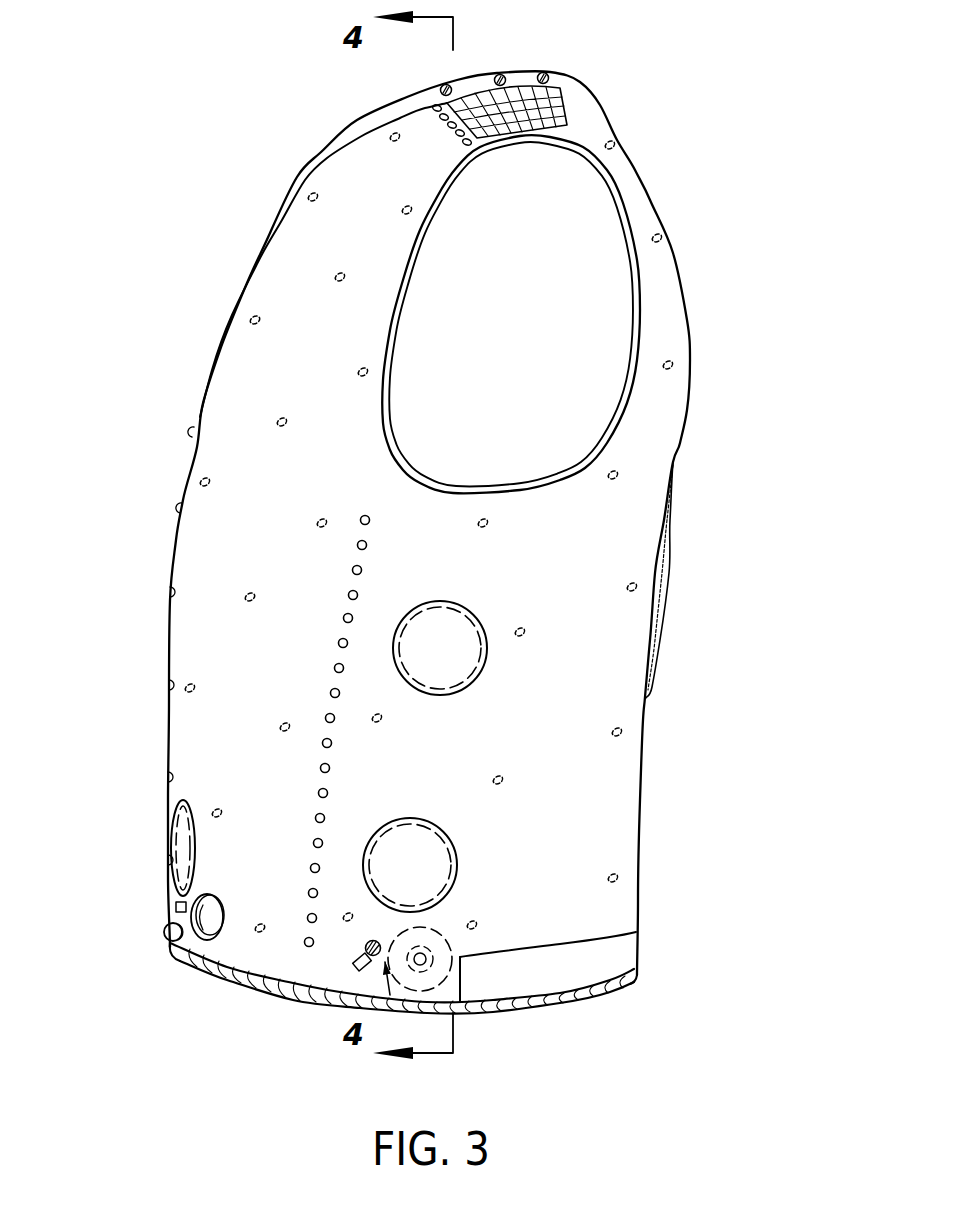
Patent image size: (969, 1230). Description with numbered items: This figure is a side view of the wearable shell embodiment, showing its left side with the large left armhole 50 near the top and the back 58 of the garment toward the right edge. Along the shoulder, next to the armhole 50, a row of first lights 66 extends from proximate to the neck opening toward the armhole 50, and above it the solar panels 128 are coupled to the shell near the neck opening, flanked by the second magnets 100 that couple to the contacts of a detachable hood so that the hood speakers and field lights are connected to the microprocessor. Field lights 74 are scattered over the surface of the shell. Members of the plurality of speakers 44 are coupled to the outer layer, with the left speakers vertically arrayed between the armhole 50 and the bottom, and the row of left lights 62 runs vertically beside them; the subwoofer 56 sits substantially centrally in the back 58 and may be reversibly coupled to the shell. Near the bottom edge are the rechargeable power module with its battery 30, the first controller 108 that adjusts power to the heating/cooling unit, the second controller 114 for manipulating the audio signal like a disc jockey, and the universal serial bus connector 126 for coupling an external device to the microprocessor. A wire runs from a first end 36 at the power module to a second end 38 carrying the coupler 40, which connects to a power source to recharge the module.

The battery 30 is at (562, 962).
The first end 36 is at (462, 977).
The second end 38 is at (340, 978).
The coupler 40 is at (305, 948).
The plurality of speakers 44 is at (405, 650).
The left armhole 50 is at (563, 257).
The subwoofer 56 is at (672, 581).
The back 58 is at (638, 873).
The row of left lights 62 is at (305, 850).
The row of first lights 66 is at (450, 142).
The field lights 74 is at (607, 490).
The second magnets 100 is at (505, 75).
The first controller 108 is at (165, 932).
The second controller 114 is at (200, 930).
The universal serial bus connector 126 is at (175, 905).
The solar panels 128 is at (557, 112).